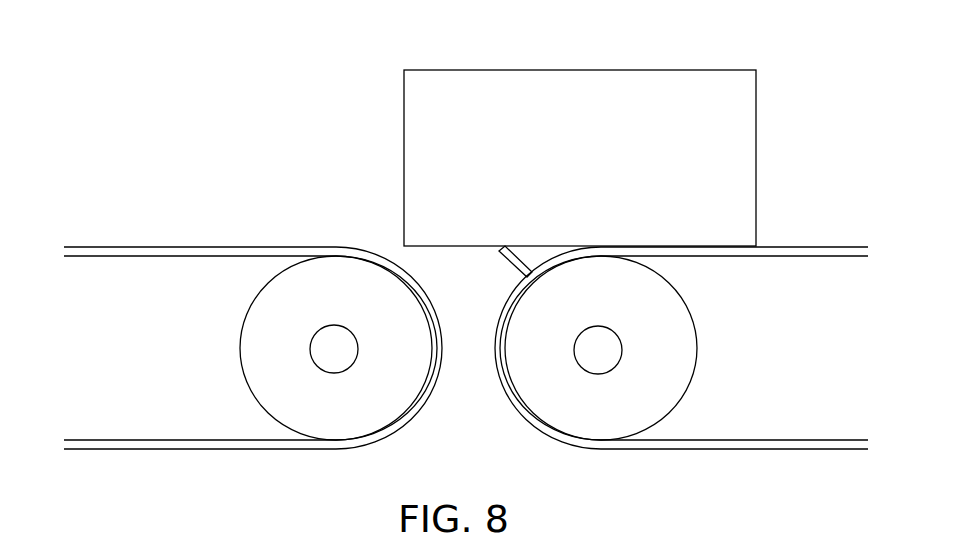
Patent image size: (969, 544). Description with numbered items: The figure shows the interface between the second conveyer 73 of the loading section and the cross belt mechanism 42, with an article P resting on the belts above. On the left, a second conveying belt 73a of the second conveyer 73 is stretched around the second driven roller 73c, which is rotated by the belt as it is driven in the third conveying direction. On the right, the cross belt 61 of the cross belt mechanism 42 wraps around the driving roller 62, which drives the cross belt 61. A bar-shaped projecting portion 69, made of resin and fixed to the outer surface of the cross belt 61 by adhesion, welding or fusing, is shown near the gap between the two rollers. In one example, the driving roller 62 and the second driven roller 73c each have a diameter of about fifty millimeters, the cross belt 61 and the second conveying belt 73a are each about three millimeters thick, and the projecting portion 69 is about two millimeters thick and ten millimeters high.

The package P is at (708, 90).
The second conveyer 73 is at (253, 291).
The second conveying belt 73a is at (160, 247).
The second driven roller 73c is at (250, 340).
The cross belt mechanism 42 is at (688, 266).
The cross belt 61 is at (778, 247).
The driving roller 62 is at (682, 365).
The projecting portion 69 is at (505, 263).